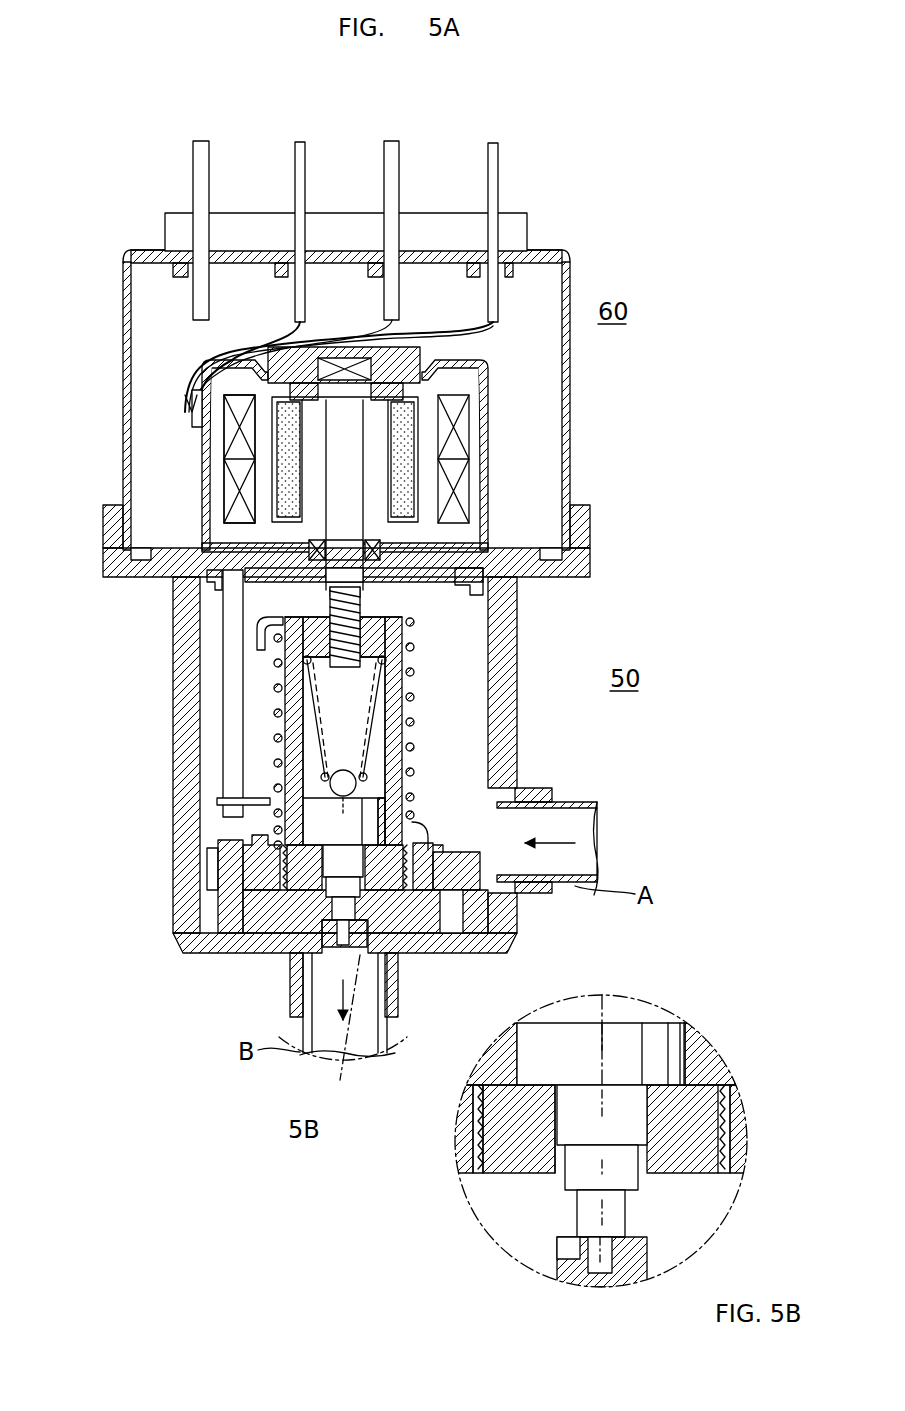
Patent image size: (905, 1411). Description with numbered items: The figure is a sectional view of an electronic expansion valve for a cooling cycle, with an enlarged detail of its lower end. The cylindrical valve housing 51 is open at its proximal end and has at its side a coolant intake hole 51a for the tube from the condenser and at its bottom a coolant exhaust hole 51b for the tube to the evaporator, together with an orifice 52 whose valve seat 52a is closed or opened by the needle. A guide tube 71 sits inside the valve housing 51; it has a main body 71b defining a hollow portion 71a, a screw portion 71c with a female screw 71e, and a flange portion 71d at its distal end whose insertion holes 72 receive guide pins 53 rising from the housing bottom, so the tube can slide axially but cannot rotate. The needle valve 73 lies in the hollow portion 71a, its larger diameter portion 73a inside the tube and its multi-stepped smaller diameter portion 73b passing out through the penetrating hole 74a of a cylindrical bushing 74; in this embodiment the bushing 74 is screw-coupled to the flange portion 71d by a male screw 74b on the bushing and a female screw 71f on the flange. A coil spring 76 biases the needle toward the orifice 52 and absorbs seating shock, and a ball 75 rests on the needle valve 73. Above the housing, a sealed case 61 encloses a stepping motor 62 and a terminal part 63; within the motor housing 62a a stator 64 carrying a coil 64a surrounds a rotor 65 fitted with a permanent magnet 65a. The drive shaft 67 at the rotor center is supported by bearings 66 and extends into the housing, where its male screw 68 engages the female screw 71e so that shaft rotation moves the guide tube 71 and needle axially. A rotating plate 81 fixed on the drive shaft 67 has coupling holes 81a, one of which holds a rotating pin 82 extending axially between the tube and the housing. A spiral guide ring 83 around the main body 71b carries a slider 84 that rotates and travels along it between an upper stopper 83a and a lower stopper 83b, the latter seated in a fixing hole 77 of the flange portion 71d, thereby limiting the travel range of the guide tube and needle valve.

In FIG. 5A, the valve housing 51 is at (508, 598).
In FIG. 5A, the coolant intake hole 51a is at (552, 795).
In FIG. 5A, the coolant exhaust hole 51b is at (292, 1000).
In FIG. 5A, the orifice 52 is at (336, 945).
In FIG. 5B, the orifice 52 is at (600, 1275).
In FIG. 5A, the valve seat 52a is at (326, 938).
In FIG. 5B, the valve seat 52a is at (565, 1248).
In FIG. 5A, the guide pins 53 is at (300, 922).
In FIG. 5A, the sealed case 61 is at (123, 308).
In FIG. 5A, the stepping motor 62 is at (192, 405).
In FIG. 5A, the motor housing 62a is at (190, 435).
In FIG. 5A, the terminal part 63 is at (209, 168).
In FIG. 5A, the stator 64 is at (214, 502).
In FIG. 5A, the coil 64a is at (226, 482).
In FIG. 5A, the rotor 65 is at (378, 437).
In FIG. 5A, the permanent magnet 65a is at (412, 457).
In FIG. 5A, the bearings 66 is at (345, 366).
In FIG. 5A, the drive shaft 67 is at (316, 546).
In FIG. 5A, the male screw 68 is at (330, 597).
In FIG. 5A, the guide tube 71 is at (414, 753).
In FIG. 5A, the hollow portion 71a is at (303, 738).
In FIG. 5A, the main body 71b is at (397, 717).
In FIG. 5A, the screw portion 71c is at (400, 620).
In FIG. 5A, the flange portion 71d is at (207, 870).
In FIG. 5B, the flange portion 71d is at (730, 1128).
In FIG. 5A, the female screw 71e is at (362, 642).
In FIG. 5B, the female screw 71f is at (730, 1150).
In FIG. 5A, the insertion holes 72 is at (230, 902).
In FIG. 5A, the needle valve 73 is at (402, 808).
In FIG. 5B, the needle valve 73 is at (692, 1047).
In FIG. 5A, the larger diameter portion 73a is at (358, 823).
In FIG. 5A, the smaller diameter portion 73b is at (425, 882).
In FIG. 5A, the bushing 74 is at (396, 882).
In FIG. 5B, the bushing 74 is at (527, 1165).
In FIG. 5A, the penetrating hole 74a is at (352, 905).
In FIG. 5B, the penetrating hole 74a is at (562, 1172).
In FIG. 5B, the male screw 74b is at (490, 1170).
In FIG. 5A, the ball 75 is at (268, 800).
In FIG. 5A, the coil spring 76 is at (331, 785).
In FIG. 5A, the fixing hole 77 is at (452, 915).
In FIG. 5A, the rotating plate 81 is at (300, 553).
In FIG. 5A, the coupling holes 81a is at (478, 582).
In FIG. 5A, the rotating pin 82 is at (233, 720).
In FIG. 5A, the spiral guide ring 83 is at (276, 688).
In FIG. 5A, the upper stopper 83a is at (258, 640).
In FIG. 5A, the lower stopper 83b is at (412, 840).
In FIG. 5A, the slider 84 is at (276, 834).